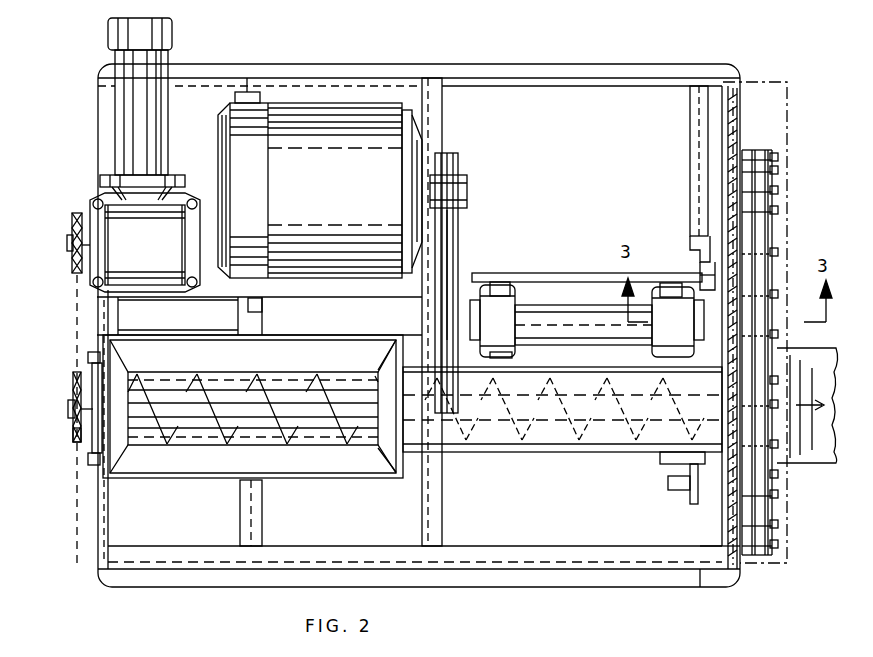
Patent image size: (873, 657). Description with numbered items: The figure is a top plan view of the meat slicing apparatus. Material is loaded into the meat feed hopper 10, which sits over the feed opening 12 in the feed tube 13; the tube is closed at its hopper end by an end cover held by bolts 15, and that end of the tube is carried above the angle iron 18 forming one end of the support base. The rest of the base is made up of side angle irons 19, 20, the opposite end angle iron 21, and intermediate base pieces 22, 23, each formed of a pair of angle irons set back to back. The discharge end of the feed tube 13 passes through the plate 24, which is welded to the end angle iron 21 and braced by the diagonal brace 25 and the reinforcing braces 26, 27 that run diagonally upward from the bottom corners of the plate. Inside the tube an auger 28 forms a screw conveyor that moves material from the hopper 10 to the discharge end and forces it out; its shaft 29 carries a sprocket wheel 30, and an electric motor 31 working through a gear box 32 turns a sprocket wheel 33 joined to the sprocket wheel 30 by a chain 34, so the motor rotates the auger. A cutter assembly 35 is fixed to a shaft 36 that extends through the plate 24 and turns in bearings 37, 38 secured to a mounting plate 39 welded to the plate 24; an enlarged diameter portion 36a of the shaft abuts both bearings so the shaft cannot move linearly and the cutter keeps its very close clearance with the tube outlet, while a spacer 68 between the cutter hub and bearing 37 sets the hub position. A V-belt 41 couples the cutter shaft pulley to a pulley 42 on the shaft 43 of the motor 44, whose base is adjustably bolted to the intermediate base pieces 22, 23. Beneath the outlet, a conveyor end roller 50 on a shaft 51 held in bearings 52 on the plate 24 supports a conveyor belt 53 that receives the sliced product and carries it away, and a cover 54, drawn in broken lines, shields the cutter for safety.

The meat feed hopper 10 is at (285, 470).
The feed opening 12 is at (150, 452).
The feed tube 13 is at (540, 455).
The bolts 15 is at (88, 358).
The angle iron 18 is at (100, 532).
The side angle iron 19 is at (556, 578).
The side angle iron 20 is at (553, 72).
The opposite end angle iron 21 is at (720, 580).
The intermediate base piece 22 is at (443, 112).
The intermediate base piece 23 is at (255, 522).
The plate 24 is at (735, 118).
The diagonal brace 25 is at (582, 500).
The reinforcing brace 26 is at (690, 530).
The reinforcing brace 27 is at (695, 164).
The auger 28 is at (358, 458).
The shaft 29 is at (68, 408).
The sprocket wheel 30 is at (73, 436).
The electric motor 31 is at (135, 100).
The gear box 32 is at (145, 242).
The sprocket wheel 33 is at (70, 228).
The chain 34 is at (76, 322).
The cutter assembly 35 is at (778, 184).
The shaft 36 is at (500, 290).
The enlarged diameter portion 36a is at (590, 305).
The bearing 37 is at (660, 345).
The bearing 38 is at (514, 340).
The mounting plate 39 is at (535, 273).
The V-belt 41 is at (455, 226).
The pulley 42 is at (455, 145).
The shaft 43 is at (467, 182).
The motor 44 is at (345, 108).
The conveyor end roller 50 is at (660, 458).
The shaft 51 is at (688, 492).
The bearings 52 is at (668, 483).
The conveyor belt 53 is at (805, 465).
The cover 54 is at (788, 110).
The spacer 68 is at (680, 300).